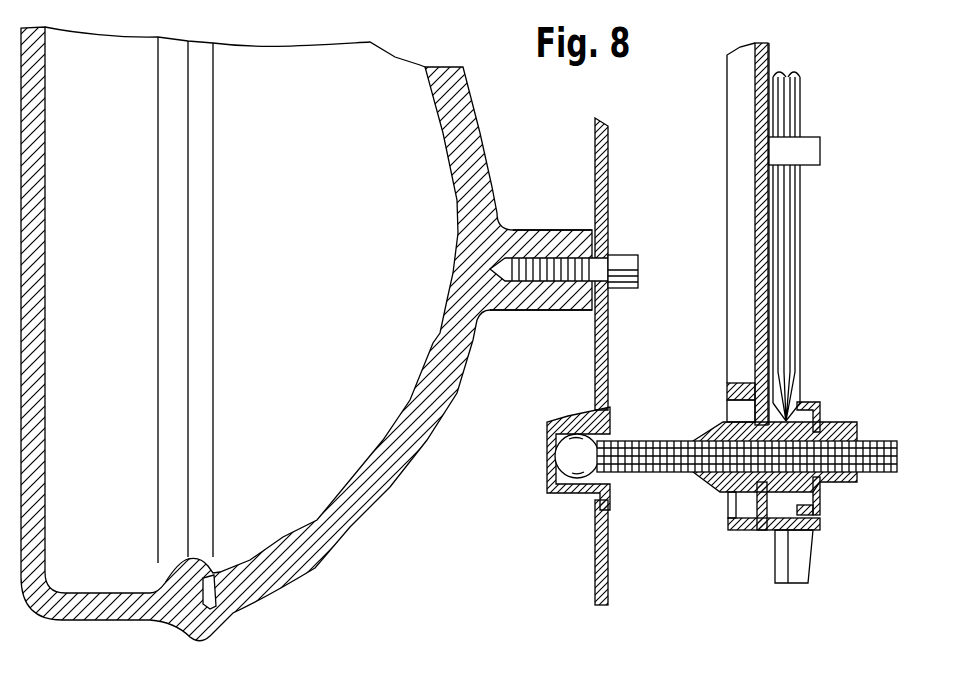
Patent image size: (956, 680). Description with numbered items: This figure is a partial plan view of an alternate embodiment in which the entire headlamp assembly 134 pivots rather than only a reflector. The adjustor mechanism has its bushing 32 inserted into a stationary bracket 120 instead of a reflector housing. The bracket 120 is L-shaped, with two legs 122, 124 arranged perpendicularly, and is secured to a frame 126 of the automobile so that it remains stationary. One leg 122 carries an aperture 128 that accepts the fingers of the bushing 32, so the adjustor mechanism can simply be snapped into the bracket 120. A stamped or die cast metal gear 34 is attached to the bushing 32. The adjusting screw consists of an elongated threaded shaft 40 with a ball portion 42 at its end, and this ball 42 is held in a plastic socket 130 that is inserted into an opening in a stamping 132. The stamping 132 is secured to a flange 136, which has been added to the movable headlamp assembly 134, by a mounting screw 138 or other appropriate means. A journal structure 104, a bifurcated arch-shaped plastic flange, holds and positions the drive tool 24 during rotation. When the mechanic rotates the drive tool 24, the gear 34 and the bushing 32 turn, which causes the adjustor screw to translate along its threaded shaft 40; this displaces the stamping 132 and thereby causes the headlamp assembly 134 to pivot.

The headlamp assembly 134 is at (362, 528).
The flange 136 is at (545, 232).
The mounting screw 138 is at (632, 262).
The stamping 132 is at (596, 363).
The plastic socket 130 is at (560, 494).
The ball portion 42 is at (567, 455).
The frame 126 is at (740, 130).
The stationary bracket 120 is at (755, 262).
The leg 122 is at (757, 312).
The drive tool 24 is at (787, 98).
The journal structure 104 is at (810, 155).
The aperture 128 is at (720, 425).
The gear member 34 is at (812, 402).
The bushing 32 is at (722, 483).
The leg 124 is at (766, 532).
The elongated threaded shaft 40 is at (882, 472).